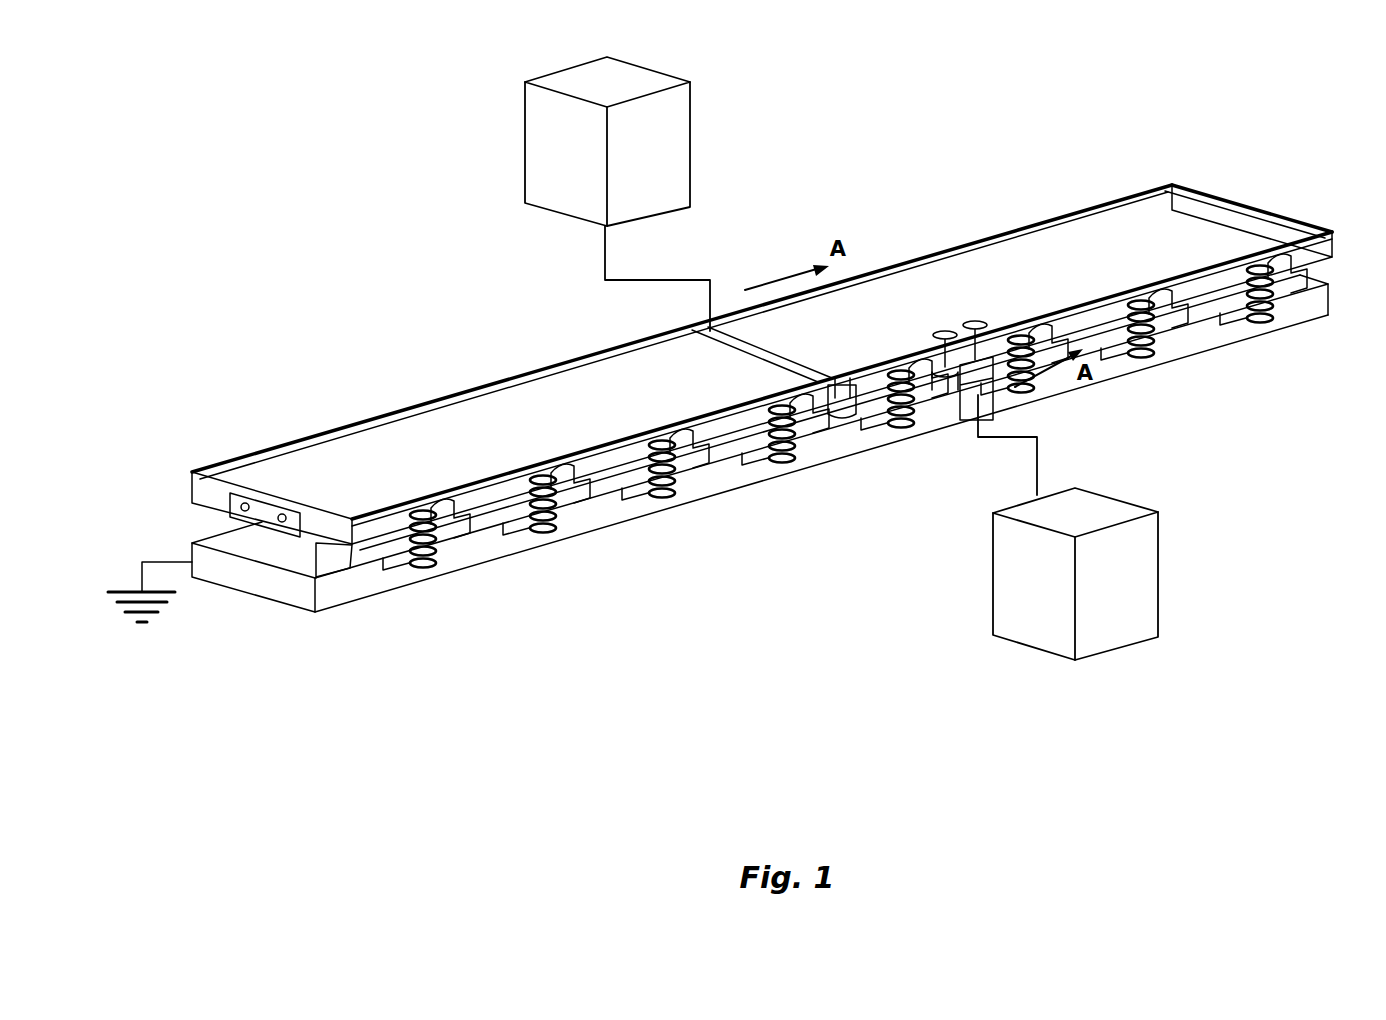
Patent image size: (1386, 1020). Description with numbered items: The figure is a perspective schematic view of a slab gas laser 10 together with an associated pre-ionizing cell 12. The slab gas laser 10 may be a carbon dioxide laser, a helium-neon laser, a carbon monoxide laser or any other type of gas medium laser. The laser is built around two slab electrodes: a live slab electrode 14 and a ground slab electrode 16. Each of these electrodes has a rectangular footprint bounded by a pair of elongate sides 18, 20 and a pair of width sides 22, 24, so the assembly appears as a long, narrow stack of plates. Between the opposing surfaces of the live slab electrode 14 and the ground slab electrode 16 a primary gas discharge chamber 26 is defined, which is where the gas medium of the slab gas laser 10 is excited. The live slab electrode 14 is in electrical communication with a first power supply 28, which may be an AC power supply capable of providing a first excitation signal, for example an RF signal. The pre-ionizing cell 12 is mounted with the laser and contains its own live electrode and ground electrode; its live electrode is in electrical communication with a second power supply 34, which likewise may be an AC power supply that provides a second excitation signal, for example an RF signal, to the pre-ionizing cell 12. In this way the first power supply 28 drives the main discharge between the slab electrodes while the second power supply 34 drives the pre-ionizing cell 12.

The slab gas laser 10 is at (178, 476).
The pre-ionizing cell 12 is at (948, 398).
The live slab electrode 14 is at (872, 313).
The ground slab electrode 16 is at (690, 503).
The elongate side 18 is at (510, 373).
The elongate side 20 is at (510, 483).
The width side 22 is at (250, 574).
The width side 24 is at (1203, 195).
The primary gas discharge chamber 26 is at (736, 446).
The first power supply 28 is at (692, 153).
The second power supply 34 is at (1160, 560).